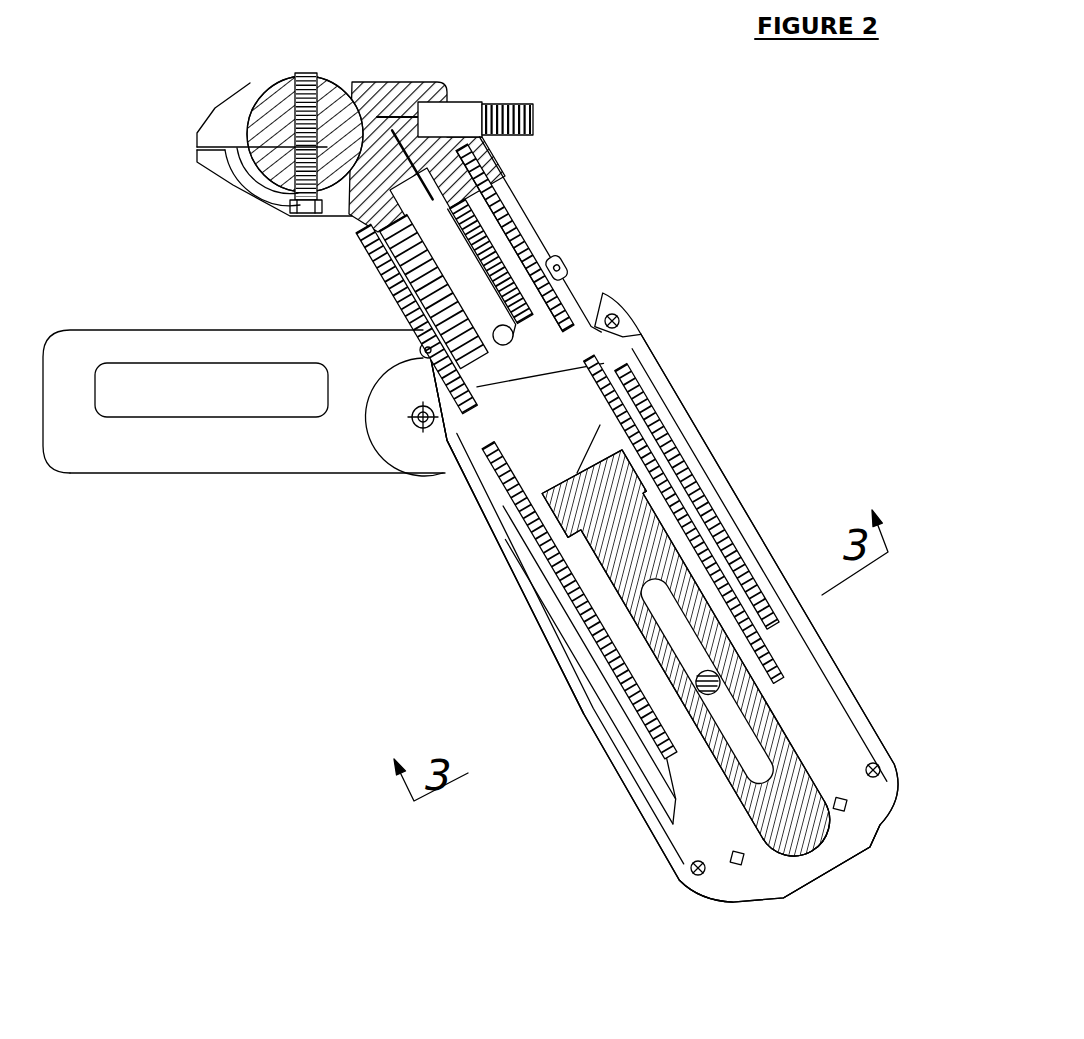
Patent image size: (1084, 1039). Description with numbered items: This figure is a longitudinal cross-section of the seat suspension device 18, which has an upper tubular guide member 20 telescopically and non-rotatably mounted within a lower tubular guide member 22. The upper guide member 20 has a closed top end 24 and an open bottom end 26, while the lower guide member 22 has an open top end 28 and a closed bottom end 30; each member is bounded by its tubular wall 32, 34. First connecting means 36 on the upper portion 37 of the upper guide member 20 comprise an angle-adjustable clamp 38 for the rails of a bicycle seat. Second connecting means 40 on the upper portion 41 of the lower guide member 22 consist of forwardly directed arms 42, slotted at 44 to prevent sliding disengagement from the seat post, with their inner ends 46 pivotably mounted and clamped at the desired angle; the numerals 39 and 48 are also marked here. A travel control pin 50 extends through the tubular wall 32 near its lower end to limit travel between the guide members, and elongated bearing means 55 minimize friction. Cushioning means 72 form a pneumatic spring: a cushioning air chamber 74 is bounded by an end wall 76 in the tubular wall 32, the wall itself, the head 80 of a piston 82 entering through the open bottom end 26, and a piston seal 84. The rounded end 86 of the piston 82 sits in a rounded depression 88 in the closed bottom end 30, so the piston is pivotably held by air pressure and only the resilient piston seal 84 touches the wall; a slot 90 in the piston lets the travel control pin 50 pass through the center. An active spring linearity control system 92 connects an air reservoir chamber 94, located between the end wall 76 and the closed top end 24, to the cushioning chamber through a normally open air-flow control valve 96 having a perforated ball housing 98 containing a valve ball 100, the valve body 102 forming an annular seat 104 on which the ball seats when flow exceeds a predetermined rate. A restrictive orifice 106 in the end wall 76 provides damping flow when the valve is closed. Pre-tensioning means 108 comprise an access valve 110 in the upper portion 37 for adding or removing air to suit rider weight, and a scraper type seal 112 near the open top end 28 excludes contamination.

The seat suspension device 18 is at (544, 606).
The upper guide member 20 is at (613, 528).
The lower guide member 22 is at (570, 648).
The closed top end 24 is at (427, 125).
The open bottom end 26 is at (597, 764).
The open top end 28 is at (647, 317).
The closed bottom end 30 is at (710, 905).
The tubular wall 32 is at (742, 565).
The tubular wall 34 is at (672, 315).
The first connecting means 36 is at (275, 131).
The upper portion 37 is at (402, 319).
The clamp 38 is at (262, 186).
The guide wall 39 is at (442, 455).
The second connecting means 40 is at (233, 418).
The upper portion 41 is at (491, 615).
The arms 42 is at (257, 505).
The slot 44 is at (211, 345).
The inner ends 46 is at (351, 437).
The pivot pin 48 is at (267, 406).
The travel control pin 50 is at (666, 662).
The elongated bearing means 55 is at (564, 600).
The cushioning means 72 is at (545, 665).
The cushioning air chamber 74 is at (564, 444).
The end wall 76 is at (687, 478).
The piston head 80 is at (680, 519).
The piston 82 is at (650, 696).
The piston seal 84 is at (547, 681).
The rounded end 86 is at (832, 856).
The rounded depression 88 is at (775, 891).
The slot 90 is at (568, 600).
The active spring linearity control system 92 is at (583, 238).
The air reservoir chamber 94 is at (413, 292).
The air-flow control valve 96 is at (580, 261).
The perforated ball housing 98 is at (575, 273).
The valve ball 100 is at (631, 268).
The valve body 102 is at (589, 241).
The annular seat 104 is at (424, 326).
The restrictive orifice 106 is at (483, 383).
The pre-tensioning means 108 is at (456, 95).
The access valve 110 is at (532, 94).
The scraper type seal 112 is at (638, 258).